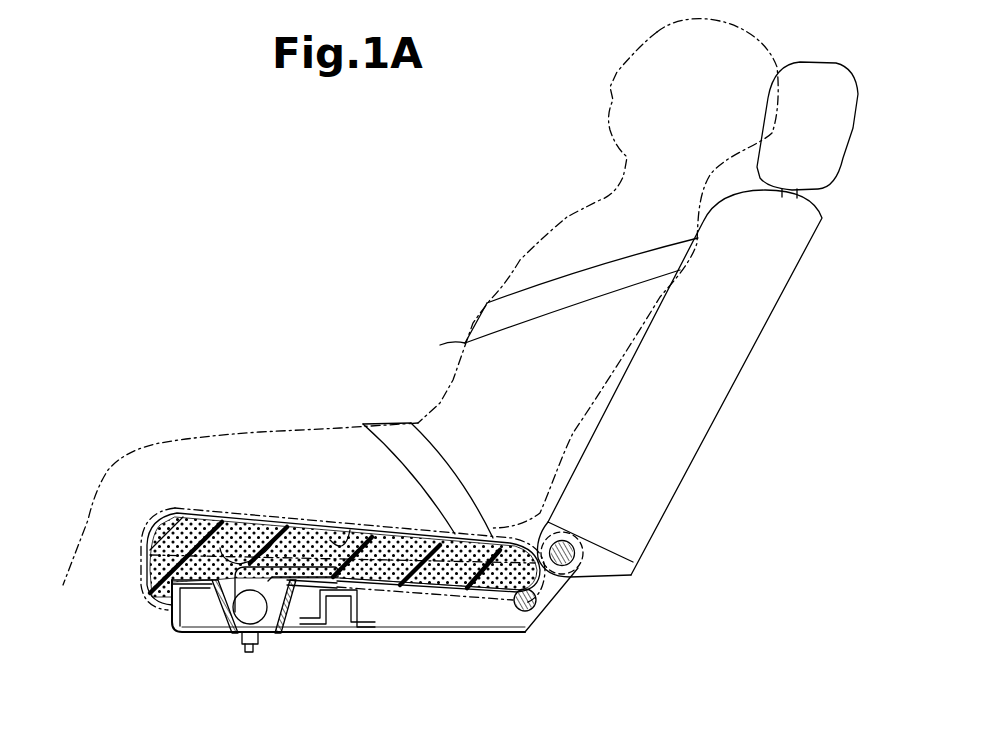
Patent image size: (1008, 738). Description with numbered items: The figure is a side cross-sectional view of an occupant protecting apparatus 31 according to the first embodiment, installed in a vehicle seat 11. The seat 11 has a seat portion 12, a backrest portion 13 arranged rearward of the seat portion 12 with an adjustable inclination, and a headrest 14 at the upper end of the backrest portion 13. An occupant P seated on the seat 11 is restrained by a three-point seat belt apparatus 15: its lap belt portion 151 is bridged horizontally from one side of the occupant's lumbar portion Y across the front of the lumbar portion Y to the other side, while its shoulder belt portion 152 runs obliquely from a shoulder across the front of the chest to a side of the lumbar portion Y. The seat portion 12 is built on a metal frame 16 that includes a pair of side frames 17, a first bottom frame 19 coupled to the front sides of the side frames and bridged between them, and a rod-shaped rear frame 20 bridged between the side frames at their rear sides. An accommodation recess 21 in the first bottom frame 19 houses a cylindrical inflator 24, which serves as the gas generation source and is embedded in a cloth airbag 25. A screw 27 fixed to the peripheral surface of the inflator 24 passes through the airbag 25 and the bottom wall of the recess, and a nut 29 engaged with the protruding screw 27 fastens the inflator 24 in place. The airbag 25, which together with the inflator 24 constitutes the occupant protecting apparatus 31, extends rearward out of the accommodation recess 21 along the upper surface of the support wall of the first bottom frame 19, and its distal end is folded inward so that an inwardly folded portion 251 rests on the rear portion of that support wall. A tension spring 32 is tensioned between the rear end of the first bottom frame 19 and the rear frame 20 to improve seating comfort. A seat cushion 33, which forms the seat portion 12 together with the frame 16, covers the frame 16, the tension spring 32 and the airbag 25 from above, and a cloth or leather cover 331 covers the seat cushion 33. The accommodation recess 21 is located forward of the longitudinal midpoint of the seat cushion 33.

The occupant P is at (657, 30).
The lumbar portion Y is at (568, 450).
The seat 11 is at (679, 403).
The seat portion 12 is at (543, 617).
The backrest portion 13 is at (635, 528).
The headrest 14 is at (820, 68).
The seat belt apparatus 15 is at (512, 388).
The lap belt portion 151 is at (393, 437).
The shoulder belt portion 152 is at (480, 320).
The frame 16 is at (372, 652).
The side frame 17 is at (427, 627).
The first bottom frame 19 is at (287, 632).
The rear frame 20 is at (525, 632).
The accommodation recess 21 is at (223, 612).
The inflator 24 is at (253, 601).
The airbag 25 is at (220, 548).
The inwardly folded portion 251 is at (290, 545).
The screw 27 is at (253, 648).
The nut 29 is at (243, 638).
The occupant protecting apparatus 31 is at (343, 533).
The tension spring 32 is at (400, 609).
The seat cushion 33 is at (398, 537).
The cover 331 is at (153, 503).